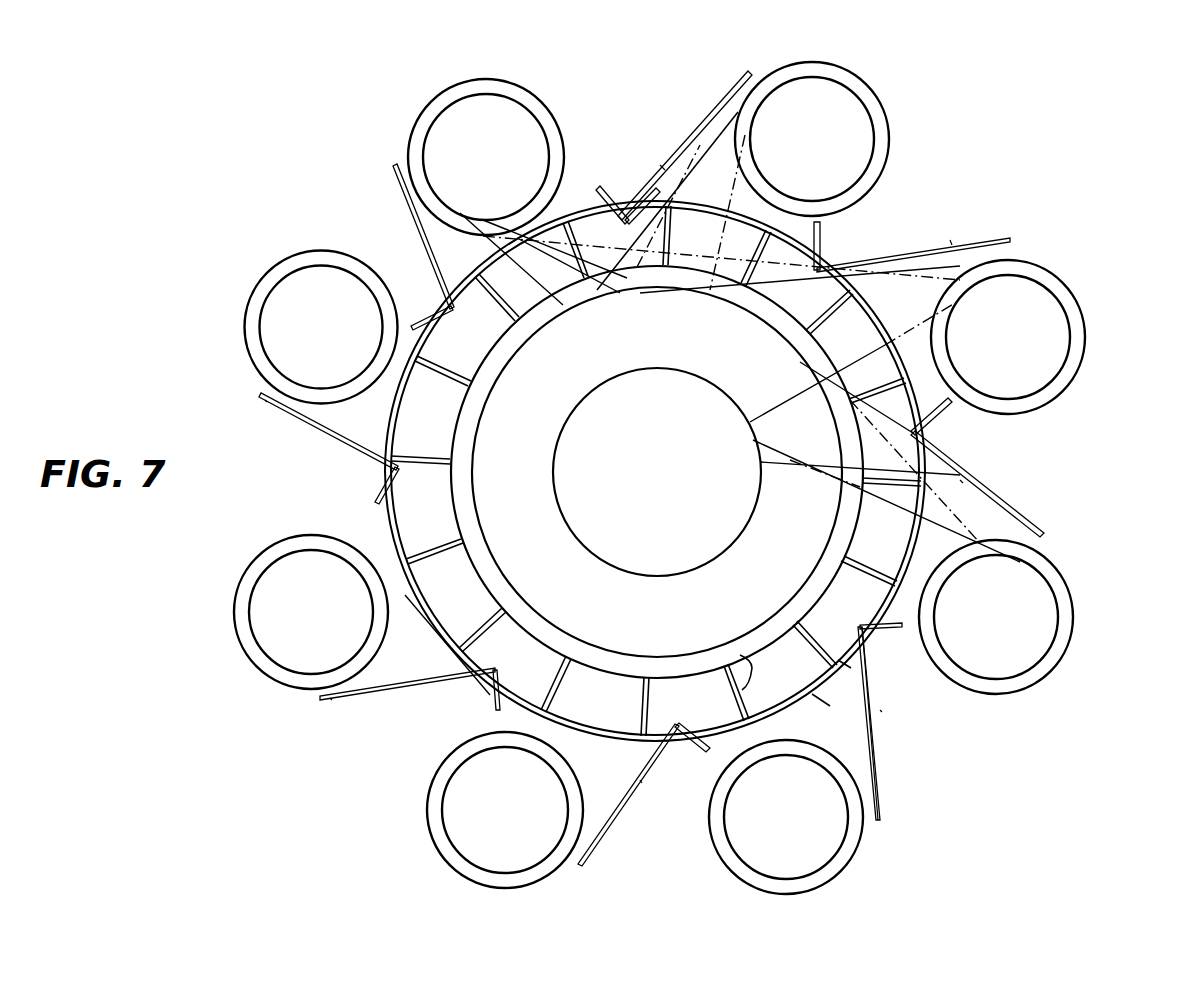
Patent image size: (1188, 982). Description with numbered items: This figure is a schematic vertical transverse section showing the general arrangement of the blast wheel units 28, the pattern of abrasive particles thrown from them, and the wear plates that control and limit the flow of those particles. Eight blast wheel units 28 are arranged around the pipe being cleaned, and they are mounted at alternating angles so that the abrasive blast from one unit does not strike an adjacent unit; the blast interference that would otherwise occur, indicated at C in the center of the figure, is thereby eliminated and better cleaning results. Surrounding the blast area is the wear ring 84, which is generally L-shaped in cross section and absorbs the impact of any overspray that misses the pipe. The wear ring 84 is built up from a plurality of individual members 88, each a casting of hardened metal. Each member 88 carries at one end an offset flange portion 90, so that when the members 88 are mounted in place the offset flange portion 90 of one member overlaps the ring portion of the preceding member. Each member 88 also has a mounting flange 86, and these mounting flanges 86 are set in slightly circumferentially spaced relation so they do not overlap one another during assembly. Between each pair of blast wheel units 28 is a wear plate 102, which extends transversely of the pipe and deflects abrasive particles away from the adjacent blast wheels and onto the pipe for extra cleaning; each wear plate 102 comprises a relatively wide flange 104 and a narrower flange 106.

The blast wheel unit 28 is at (568, 55).
The wear ring 84 is at (772, 730).
The mounting flange 86 is at (750, 660).
The individual member 88 is at (820, 703).
The offset flange portion 90 is at (850, 663).
The wear plate 102 is at (393, 205).
The wide flange 104 is at (668, 165).
The narrow flange 106 is at (598, 186).
The blast interference C is at (668, 484).